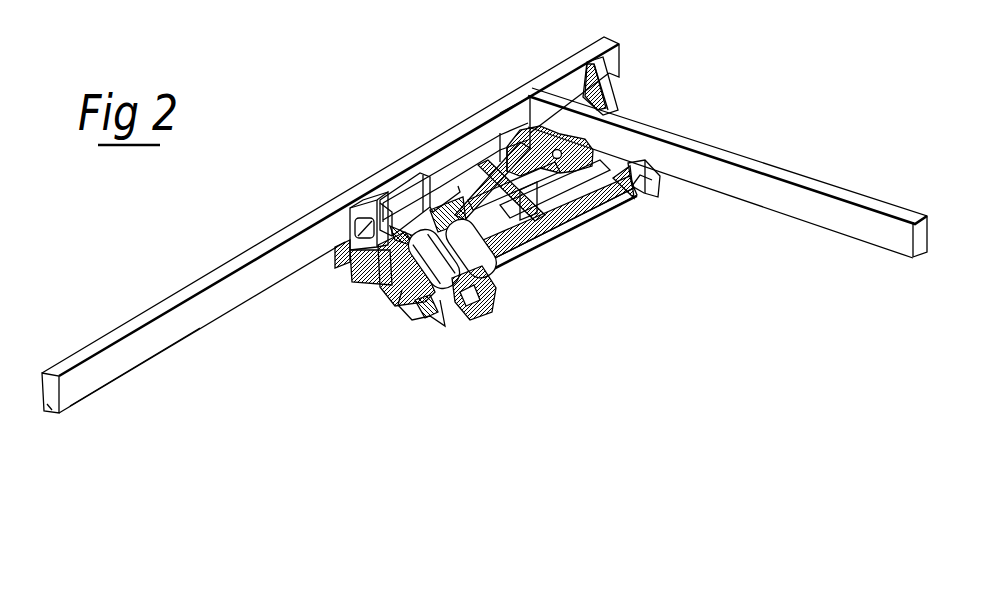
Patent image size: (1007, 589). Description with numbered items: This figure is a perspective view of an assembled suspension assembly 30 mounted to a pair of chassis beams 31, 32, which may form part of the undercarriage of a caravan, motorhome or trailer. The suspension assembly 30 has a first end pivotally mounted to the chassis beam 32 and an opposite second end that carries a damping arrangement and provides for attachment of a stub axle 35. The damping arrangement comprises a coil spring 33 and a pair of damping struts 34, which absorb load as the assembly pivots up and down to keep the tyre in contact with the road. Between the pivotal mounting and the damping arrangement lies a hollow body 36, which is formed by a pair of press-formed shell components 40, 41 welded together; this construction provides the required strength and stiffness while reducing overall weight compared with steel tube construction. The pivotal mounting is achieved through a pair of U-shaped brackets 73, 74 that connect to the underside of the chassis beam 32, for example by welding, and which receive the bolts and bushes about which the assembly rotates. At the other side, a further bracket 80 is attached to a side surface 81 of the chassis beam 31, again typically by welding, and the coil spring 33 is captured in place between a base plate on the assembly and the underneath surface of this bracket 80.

The suspension assembly 30 is at (347, 443).
The chassis beam 31 is at (140, 315).
The chassis beam 32 is at (757, 157).
The coil spring 33 is at (397, 303).
The damping struts 34 is at (455, 320).
The stub axle 35 is at (340, 252).
The hollow body 36 is at (563, 203).
The shell component 40 is at (503, 143).
The shell component 41 is at (583, 220).
The U-shaped bracket 73 is at (590, 147).
The U-shaped bracket 74 is at (658, 168).
The bracket 80 is at (343, 223).
The side surface 81 is at (120, 357).